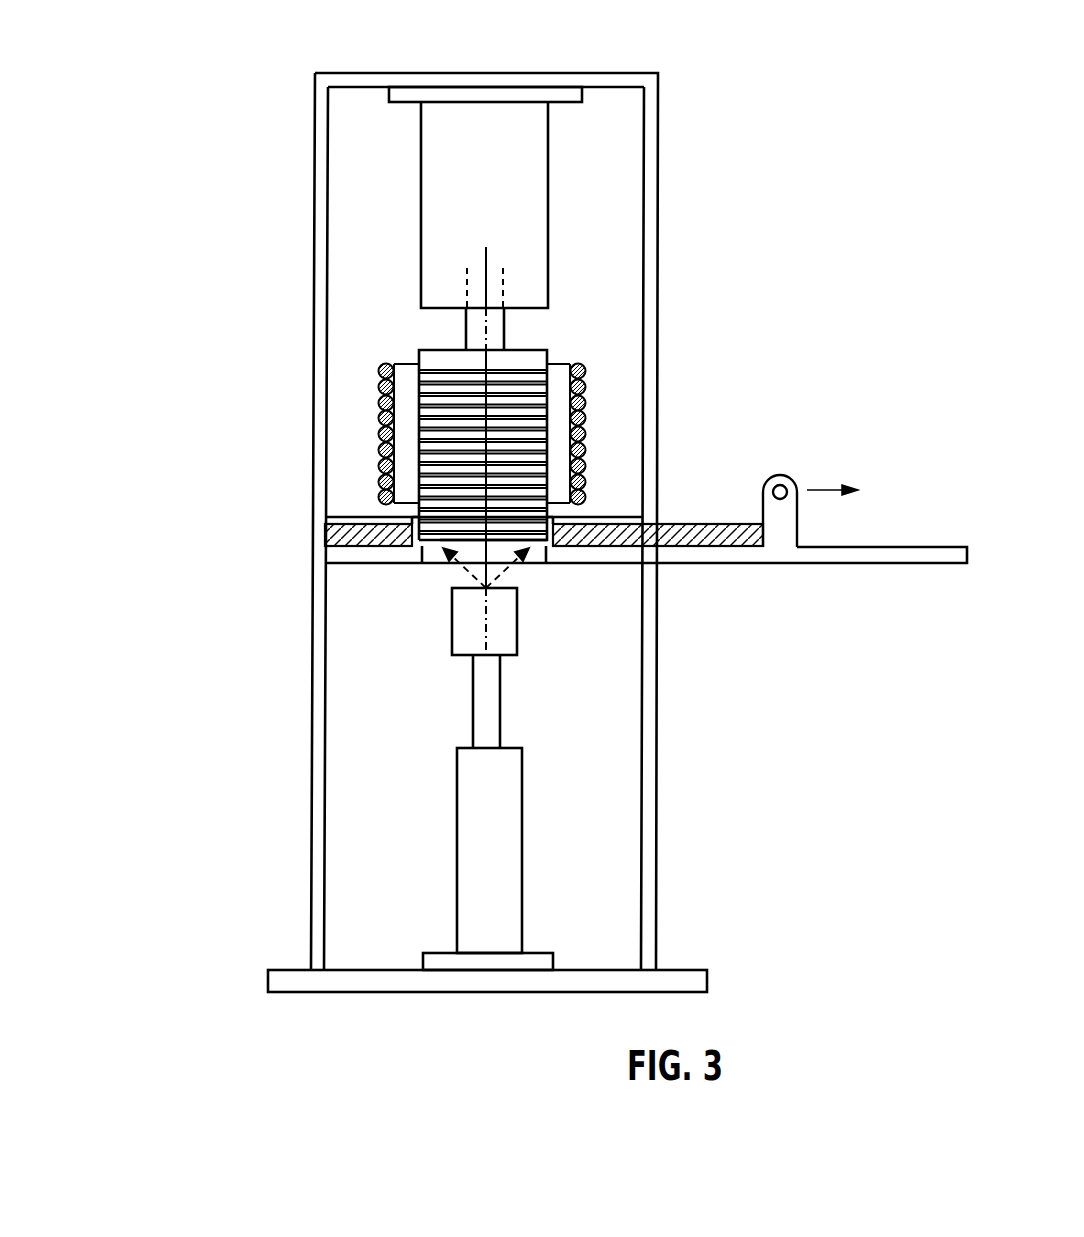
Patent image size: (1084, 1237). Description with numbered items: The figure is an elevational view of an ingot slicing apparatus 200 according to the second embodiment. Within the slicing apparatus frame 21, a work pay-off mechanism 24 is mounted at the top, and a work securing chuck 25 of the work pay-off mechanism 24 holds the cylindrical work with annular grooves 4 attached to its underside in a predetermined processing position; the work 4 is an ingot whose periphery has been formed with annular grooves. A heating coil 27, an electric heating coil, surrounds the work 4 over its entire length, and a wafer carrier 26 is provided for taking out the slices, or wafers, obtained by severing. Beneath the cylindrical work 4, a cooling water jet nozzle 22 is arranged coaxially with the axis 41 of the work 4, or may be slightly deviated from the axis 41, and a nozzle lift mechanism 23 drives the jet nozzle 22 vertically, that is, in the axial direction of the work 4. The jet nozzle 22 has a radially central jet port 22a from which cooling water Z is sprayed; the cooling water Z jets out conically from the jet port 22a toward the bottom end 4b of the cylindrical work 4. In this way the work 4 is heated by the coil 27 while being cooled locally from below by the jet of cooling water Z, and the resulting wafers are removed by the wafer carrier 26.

The ingot slicing apparatus 200 is at (617, 68).
The slicing apparatus frame 21 is at (316, 237).
The work pay-off mechanism 24 is at (537, 181).
The axis 41 is at (487, 364).
The work securing chuck 25 is at (528, 365).
The cylindrical work with annular grooves 4 is at (430, 406).
The bottom end of cylindrical work 4b is at (463, 568).
The heating coil 27 is at (587, 405).
The wafer carrier 26 is at (712, 523).
The cooling water jet nozzle 22 is at (500, 638).
The jet port 22a is at (495, 580).
The cooling water Z is at (485, 592).
The nozzle lift mechanism 23 is at (508, 820).